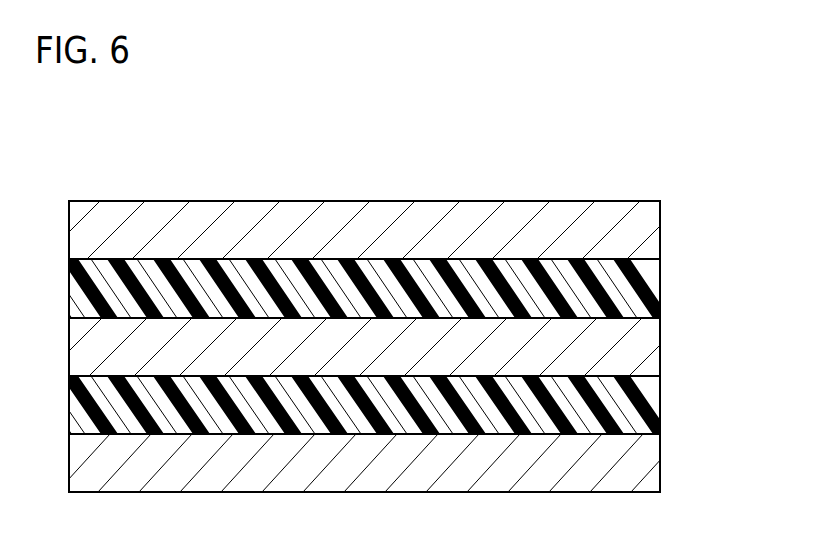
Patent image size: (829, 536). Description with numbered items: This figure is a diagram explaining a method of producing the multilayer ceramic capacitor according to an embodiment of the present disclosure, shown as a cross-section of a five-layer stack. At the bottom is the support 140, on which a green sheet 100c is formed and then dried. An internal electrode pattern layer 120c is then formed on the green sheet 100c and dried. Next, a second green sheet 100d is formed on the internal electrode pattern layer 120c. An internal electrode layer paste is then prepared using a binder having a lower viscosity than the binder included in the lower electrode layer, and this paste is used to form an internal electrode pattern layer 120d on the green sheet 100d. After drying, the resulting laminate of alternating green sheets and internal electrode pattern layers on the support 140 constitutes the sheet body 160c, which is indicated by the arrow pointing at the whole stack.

The sheet body 160c is at (556, 175).
The internal electrode pattern layer 120d is at (645, 228).
The green sheet 100d is at (644, 292).
The internal electrode pattern layer 120c is at (645, 347).
The green sheet 100c is at (645, 408).
The support 140 is at (645, 470).